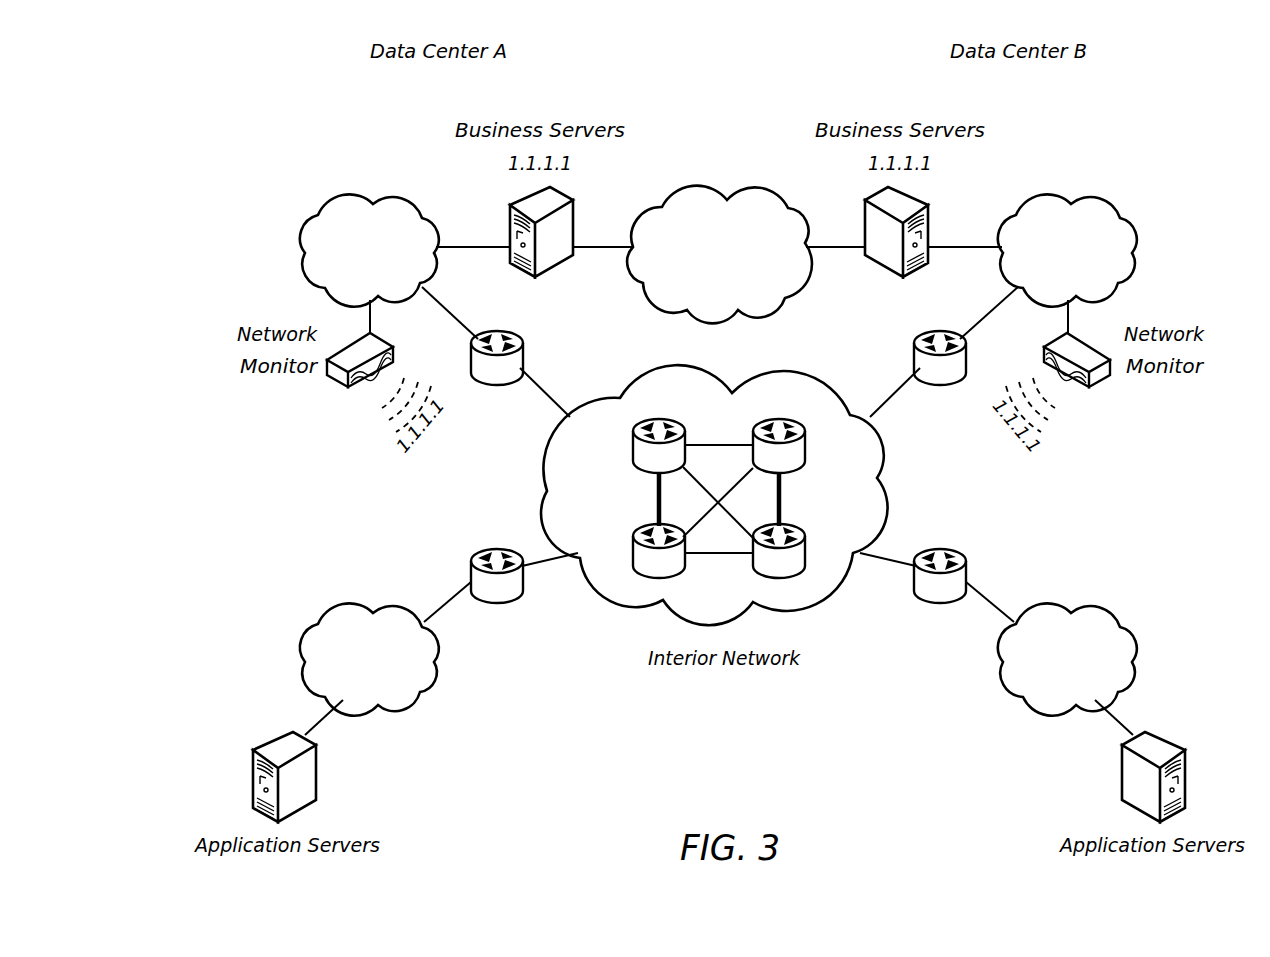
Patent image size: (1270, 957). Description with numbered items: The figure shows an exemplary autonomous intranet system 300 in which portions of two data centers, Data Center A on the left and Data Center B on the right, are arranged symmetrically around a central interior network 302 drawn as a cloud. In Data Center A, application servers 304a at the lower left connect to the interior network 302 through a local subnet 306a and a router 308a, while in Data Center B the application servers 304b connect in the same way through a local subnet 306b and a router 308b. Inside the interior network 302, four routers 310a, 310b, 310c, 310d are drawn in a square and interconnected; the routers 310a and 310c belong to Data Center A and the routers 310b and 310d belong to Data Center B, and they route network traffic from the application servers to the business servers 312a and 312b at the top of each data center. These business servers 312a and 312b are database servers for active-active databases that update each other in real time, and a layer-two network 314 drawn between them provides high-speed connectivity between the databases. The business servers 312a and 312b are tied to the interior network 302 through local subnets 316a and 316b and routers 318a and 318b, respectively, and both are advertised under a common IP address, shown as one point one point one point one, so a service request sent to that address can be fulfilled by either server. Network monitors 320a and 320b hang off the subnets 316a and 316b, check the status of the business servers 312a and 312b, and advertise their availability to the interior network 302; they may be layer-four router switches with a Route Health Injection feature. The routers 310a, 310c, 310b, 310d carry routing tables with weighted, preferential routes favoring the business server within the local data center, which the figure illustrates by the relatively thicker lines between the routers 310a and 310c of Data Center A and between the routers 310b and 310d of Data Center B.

The autonomous intranet system 300 is at (701, 52).
The interior network 302 is at (732, 393).
The application servers 304a is at (250, 777).
The application servers 304b is at (1188, 777).
The local subnet 306a is at (302, 640).
The local subnet 306b is at (1135, 640).
The router 308a is at (497, 604).
The router 308b is at (940, 604).
The router 310a is at (634, 437).
The router 310b is at (804, 437).
The router 310c is at (634, 565).
The router 310d is at (804, 565).
The business servers 312a is at (575, 231).
The business servers 312b is at (863, 232).
The Layer 2 network 314 is at (727, 200).
The local subnet 316a is at (302, 231).
The local subnet 316b is at (1135, 231).
The router 318a is at (523, 352).
The router 318b is at (914, 352).
The network monitor 320a is at (340, 388).
The network monitor 320b is at (1097, 388).